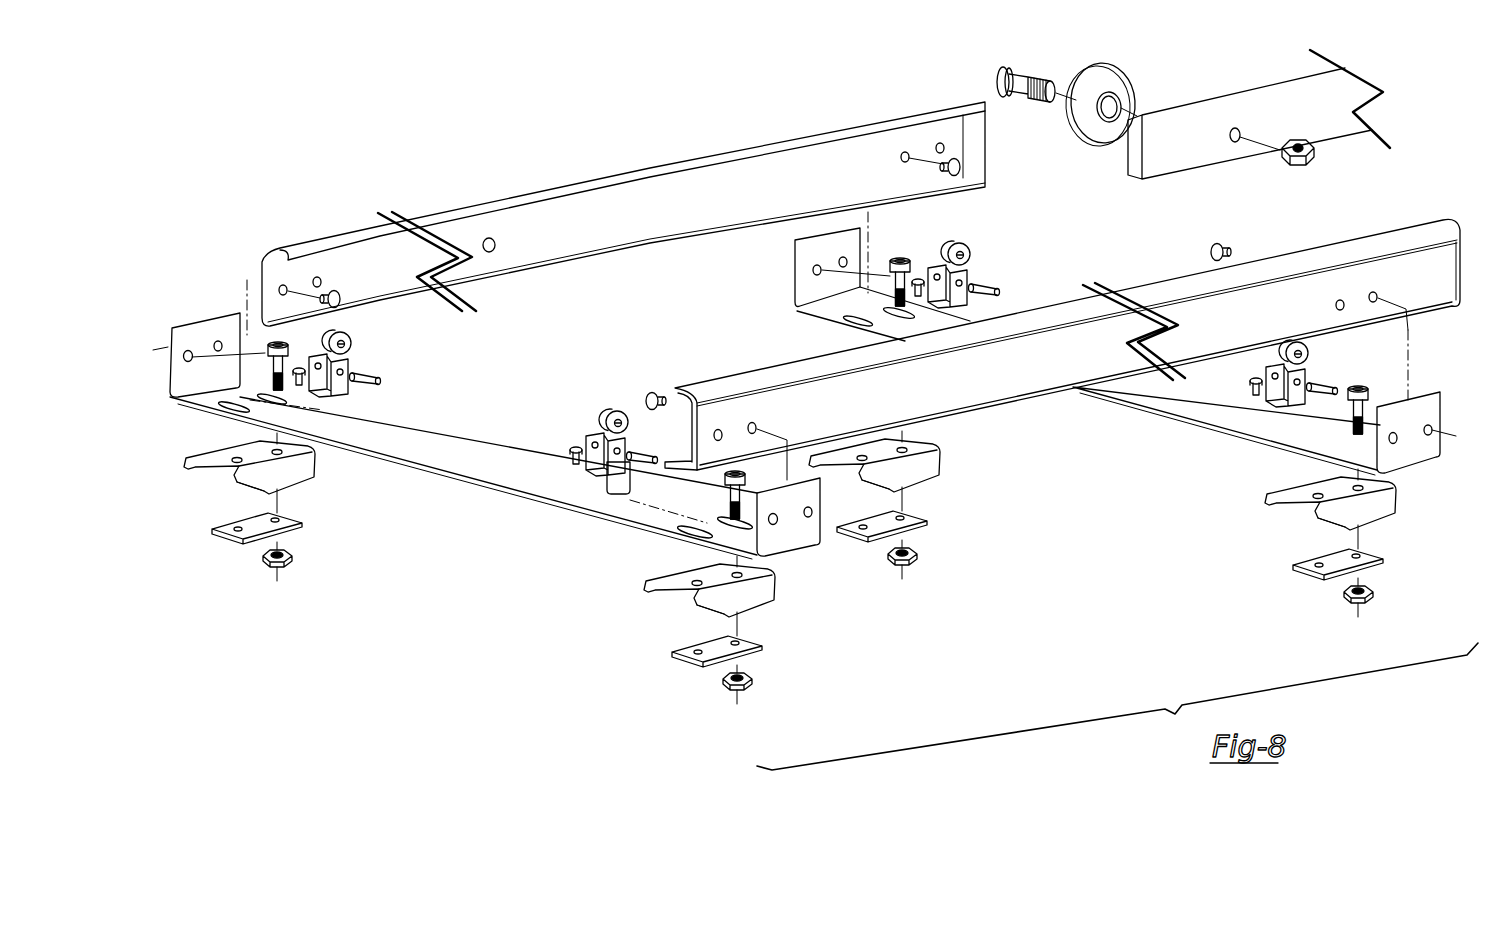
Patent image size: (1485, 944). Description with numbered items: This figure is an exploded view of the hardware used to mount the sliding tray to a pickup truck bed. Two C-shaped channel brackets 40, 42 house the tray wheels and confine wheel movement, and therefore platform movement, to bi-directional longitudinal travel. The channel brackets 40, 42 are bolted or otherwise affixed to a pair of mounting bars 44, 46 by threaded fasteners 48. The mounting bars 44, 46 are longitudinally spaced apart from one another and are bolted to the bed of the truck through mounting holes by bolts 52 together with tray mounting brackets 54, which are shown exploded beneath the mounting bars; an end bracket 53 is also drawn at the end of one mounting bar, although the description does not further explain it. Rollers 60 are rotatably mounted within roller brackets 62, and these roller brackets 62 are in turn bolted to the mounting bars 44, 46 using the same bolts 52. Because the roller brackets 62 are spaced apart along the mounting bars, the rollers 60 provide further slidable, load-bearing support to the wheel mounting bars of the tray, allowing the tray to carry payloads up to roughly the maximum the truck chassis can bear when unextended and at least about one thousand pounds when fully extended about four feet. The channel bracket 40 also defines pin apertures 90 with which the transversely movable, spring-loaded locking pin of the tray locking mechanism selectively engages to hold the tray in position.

The channel bracket 40 is at (757, 152).
The channel bracket 42 is at (1013, 383).
The mounting bar 44 is at (1203, 415).
The mounting bar 46 is at (517, 473).
The threaded fastener 48 is at (958, 166).
The bolt 52 is at (898, 258).
The end bracket 53 is at (228, 322).
The tray mounting bracket 54 is at (178, 468).
The roller 60 is at (345, 341).
The roller bracket 62 is at (347, 385).
The pin aperture 90 is at (489, 244).